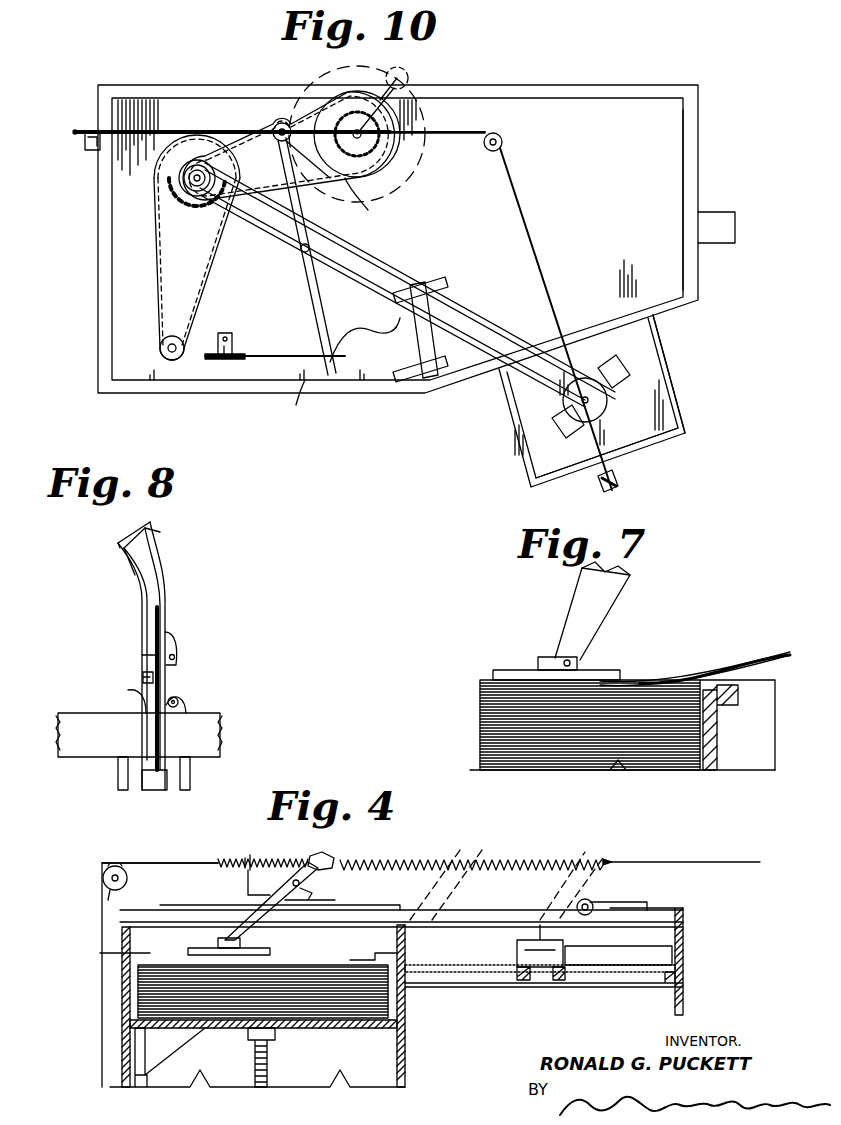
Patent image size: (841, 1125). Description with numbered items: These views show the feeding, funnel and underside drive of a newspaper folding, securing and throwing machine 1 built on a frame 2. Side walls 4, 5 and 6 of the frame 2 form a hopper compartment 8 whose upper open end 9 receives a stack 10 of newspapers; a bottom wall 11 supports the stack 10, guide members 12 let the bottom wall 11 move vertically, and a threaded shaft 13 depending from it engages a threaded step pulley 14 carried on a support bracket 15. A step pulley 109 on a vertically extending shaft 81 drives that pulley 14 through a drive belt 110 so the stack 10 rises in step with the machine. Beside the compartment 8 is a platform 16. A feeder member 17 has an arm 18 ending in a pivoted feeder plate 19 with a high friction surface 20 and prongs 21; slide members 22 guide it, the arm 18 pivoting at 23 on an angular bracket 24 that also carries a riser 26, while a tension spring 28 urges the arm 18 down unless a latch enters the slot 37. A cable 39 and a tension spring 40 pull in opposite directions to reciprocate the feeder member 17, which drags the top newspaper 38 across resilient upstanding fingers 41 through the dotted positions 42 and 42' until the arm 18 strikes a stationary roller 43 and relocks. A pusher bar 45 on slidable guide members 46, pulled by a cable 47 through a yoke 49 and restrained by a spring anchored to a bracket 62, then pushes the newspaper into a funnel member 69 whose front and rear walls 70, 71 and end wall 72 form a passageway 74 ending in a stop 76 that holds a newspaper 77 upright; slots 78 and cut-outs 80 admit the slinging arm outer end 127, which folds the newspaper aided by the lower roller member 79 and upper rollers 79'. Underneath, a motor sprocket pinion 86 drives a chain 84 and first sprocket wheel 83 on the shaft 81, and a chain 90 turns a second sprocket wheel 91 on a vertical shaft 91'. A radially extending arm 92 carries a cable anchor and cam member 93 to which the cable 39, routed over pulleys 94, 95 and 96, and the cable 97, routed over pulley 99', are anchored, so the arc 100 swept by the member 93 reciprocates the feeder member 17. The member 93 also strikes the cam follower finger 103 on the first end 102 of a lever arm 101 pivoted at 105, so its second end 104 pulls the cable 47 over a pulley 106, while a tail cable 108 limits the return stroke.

In FIG. 10, the newspaper folding, securing and throwing machine 1 is at (660, 80).
In FIG. 10, the frame 2 is at (700, 130).
In FIG. 4, the frame 2 is at (685, 902).
In FIG. 10, the side wall 4 is at (525, 456).
In FIG. 10, the side wall 5 is at (655, 445).
In FIG. 4, the side wall 5 is at (120, 1010).
In FIG. 10, the side wall 6 is at (670, 382).
In FIG. 4, the hopper compartment 8 is at (115, 945).
In FIG. 4, the upper open end 9 is at (154, 924).
In FIG. 7, the stack of newspapers 10 is at (485, 715).
In FIG. 4, the stack of newspapers 10 is at (135, 980).
In FIG. 4, the bottom wall 11 is at (290, 1035).
In FIG. 4, the guide members 12 is at (148, 1070).
In FIG. 4, the threaded shaft 13 is at (255, 1087).
In FIG. 10, the step pulley 14 is at (604, 408).
In FIG. 10, the support bracket 15 is at (630, 370).
In FIG. 7, the platform 16 is at (755, 680).
In FIG. 4, the platform 16 is at (660, 947).
In FIG. 4, the feeder member 17 is at (245, 918).
In FIG. 7, the arm 18 is at (585, 600).
In FIG. 4, the arm 18 is at (278, 856).
In FIG. 7, the feeder plate 19 is at (600, 668).
In FIG. 4, the feeder plate 19 is at (250, 945).
In FIG. 7, the high friction surface 20 is at (490, 672).
In FIG. 4, the needles or prongs 21 is at (192, 958).
In FIG. 4, the slide members 22 is at (173, 906).
In FIG. 4, the pivotal mount 23 is at (317, 885).
In FIG. 4, the angular bracket 24 is at (328, 893).
In FIG. 4, the riser 26 is at (262, 858).
In FIG. 4, the tension spring 28 is at (325, 835).
In FIG. 4, the slot 37 is at (262, 882).
In FIG. 7, the top newspaper 38 is at (660, 675).
In FIG. 4, the top newspaper 38 is at (365, 938).
In FIG. 10, the cable 39 is at (455, 128).
In FIG. 4, the cable 39 is at (188, 860).
In FIG. 4, the tension spring 40 is at (400, 855).
In FIG. 7, the resilient upstanding fingers 41 is at (712, 688).
In FIG. 4, the resilient upstanding fingers 41 is at (405, 940).
In FIG. 4, the dotted line position 42 is at (449, 885).
In FIG. 4, the dotted line position 42' is at (583, 886).
In FIG. 4, the stationary roller 43 is at (585, 915).
In FIG. 4, the newspaper pusher bar 45 is at (672, 958).
In FIG. 4, the guide members 46 is at (545, 982).
In FIG. 10, the cable 47 is at (293, 396).
In FIG. 4, the yoke 49 is at (517, 940).
In FIG. 10, the bracket 62 is at (735, 235).
In FIG. 8, the funnel member 69 is at (120, 548).
In FIG. 8, the front wall 70 is at (130, 562).
In FIG. 8, the rear wall 71 is at (150, 560).
In FIG. 8, the end wall 72 is at (142, 532).
In FIG. 8, the passageway 74 is at (150, 540).
In FIG. 8, the stop 76 is at (140, 775).
In FIG. 8, the newspaper 77 is at (148, 663).
In FIG. 8, the aligned slots 78 is at (124, 693).
In FIG. 8, the lower roller member 79 is at (139, 727).
In FIG. 8, the upper rollers 79' is at (192, 645).
In FIG. 8, the cut-outs 80 is at (168, 595).
In FIG. 10, the vertically extending shaft 81 is at (190, 182).
In FIG. 10, the first sprocket wheel 83 is at (178, 132).
In FIG. 10, the chain 84 is at (155, 248).
In FIG. 10, the sprocket pinion 86 is at (165, 338).
In FIG. 10, the chain 90 is at (361, 205).
In FIG. 10, the second sprocket wheel 91 is at (369, 134).
In FIG. 10, the vertical shaft 91' is at (389, 100).
In FIG. 10, the radially extending arm 92 is at (340, 145).
In FIG. 10, the cable anchor and cam member 93 is at (272, 132).
In FIG. 10, the pulley 94 is at (503, 142).
In FIG. 10, the pulley 95 is at (620, 485).
In FIG. 4, the pulley 96 is at (108, 866).
In FIG. 10, the cable 97 is at (100, 145).
In FIG. 4, the cable 97 is at (715, 858).
In FIG. 10, the pulley 99' is at (267, 115).
In FIG. 10, the arc 100 is at (345, 72).
In FIG. 10, the lever arm 101 is at (322, 290).
In FIG. 10, the first end 102 is at (310, 195).
In FIG. 10, the cam follower finger 103 is at (298, 168).
In FIG. 10, the second end 104 is at (335, 356).
In FIG. 10, the pivot 105 is at (298, 258).
In FIG. 10, the pulley 106 is at (228, 362).
In FIG. 10, the tail cable 108 is at (370, 340).
In FIG. 10, the step pulley 109 is at (200, 215).
In FIG. 10, the drive belt 110 is at (383, 268).
In FIG. 8, the slinging arm outer end 127 is at (140, 678).